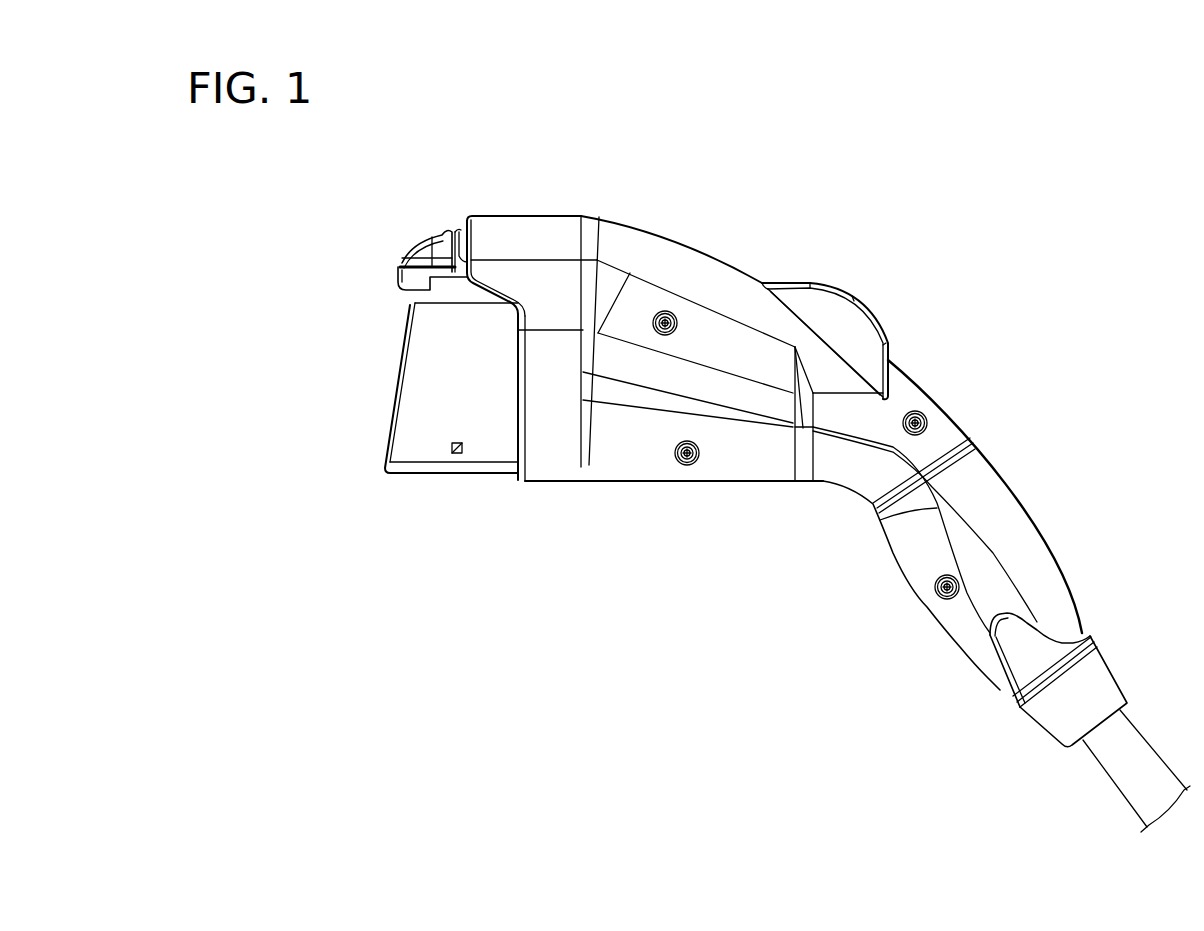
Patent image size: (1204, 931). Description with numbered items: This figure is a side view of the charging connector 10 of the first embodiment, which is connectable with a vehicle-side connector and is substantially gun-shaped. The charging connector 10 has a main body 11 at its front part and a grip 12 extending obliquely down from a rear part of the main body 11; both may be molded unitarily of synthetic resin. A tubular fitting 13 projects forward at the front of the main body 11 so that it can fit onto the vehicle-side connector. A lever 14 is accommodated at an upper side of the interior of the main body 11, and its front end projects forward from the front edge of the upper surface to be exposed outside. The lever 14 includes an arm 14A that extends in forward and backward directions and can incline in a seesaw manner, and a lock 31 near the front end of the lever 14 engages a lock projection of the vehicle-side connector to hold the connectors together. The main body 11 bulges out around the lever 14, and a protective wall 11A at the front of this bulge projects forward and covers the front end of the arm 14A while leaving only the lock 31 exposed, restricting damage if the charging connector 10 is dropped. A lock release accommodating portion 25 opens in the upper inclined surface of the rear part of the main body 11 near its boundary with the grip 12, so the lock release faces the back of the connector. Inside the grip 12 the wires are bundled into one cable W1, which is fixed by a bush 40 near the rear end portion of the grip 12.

The charging connector 10 is at (778, 214).
The main body 11 is at (702, 243).
The protective wall 11A is at (517, 215).
The grip 12 is at (1037, 501).
The tubular fitting 13 is at (428, 447).
The lever 14 is at (446, 214).
The arm 14A is at (458, 225).
The lock release accommodating portion 25 is at (858, 293).
The lock 31 is at (421, 265).
The bush 40 is at (1107, 683).
The cable W1 is at (1137, 750).